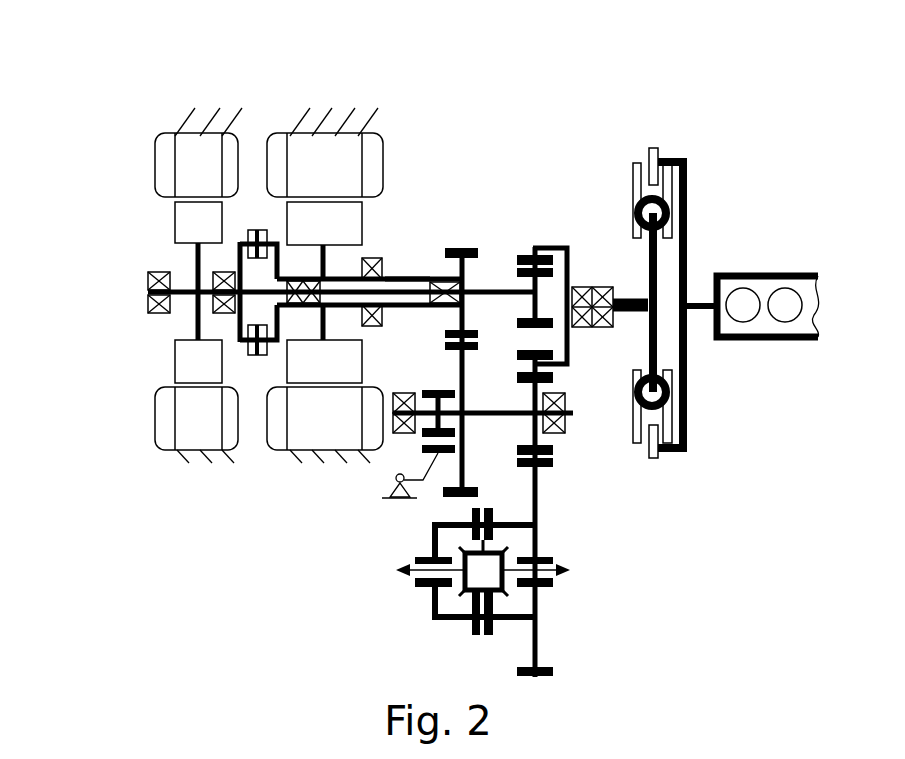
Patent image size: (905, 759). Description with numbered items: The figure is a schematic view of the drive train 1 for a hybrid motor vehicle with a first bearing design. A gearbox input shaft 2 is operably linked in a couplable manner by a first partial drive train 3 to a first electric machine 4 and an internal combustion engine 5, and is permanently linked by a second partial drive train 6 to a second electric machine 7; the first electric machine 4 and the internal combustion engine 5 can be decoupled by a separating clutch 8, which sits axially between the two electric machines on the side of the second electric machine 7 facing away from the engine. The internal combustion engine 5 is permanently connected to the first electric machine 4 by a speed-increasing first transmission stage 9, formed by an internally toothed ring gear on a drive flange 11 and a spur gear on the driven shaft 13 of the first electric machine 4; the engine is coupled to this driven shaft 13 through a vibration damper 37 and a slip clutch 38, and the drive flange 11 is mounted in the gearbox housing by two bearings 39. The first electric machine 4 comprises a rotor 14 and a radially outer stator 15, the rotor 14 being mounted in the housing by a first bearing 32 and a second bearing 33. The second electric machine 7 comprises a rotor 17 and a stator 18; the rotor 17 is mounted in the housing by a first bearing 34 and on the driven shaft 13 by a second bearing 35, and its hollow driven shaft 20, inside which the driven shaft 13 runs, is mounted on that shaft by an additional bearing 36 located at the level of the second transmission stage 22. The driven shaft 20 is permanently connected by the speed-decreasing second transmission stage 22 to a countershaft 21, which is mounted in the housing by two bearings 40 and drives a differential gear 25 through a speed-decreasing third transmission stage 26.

The drive train 1 is at (157, 117).
The gearbox input shaft 2 is at (472, 363).
The first partial drive train 3 is at (495, 290).
The first electric machine 4 is at (150, 166).
The internal combustion engine 5 is at (785, 300).
The second partial drive train 6 is at (420, 278).
The second electric machine 7 is at (390, 139).
The separating clutch 8 is at (255, 230).
The first transmission stage 9 is at (541, 247).
The drive flange 11 is at (612, 330).
The driven shaft 13 is at (185, 297).
The rotor 14 is at (192, 222).
The stator 15 is at (185, 135).
The rotor 17 is at (327, 225).
The stator 18 is at (298, 138).
The driven shaft 20 is at (403, 277).
The countershaft 21 is at (498, 418).
The second transmission stage 22 is at (481, 372).
The differential gear 25 is at (447, 600).
The third transmission stage 26 is at (539, 467).
The first bearing 32 is at (155, 277).
The second bearing 33 is at (210, 277).
The first bearing 34 is at (372, 260).
The second bearing 35 is at (303, 303).
The additional bearing 36 is at (445, 288).
The vibration damper 37 is at (665, 212).
The slip clutch 38 is at (655, 149).
The bearings 39 is at (588, 287).
The bearings 40 is at (402, 433).